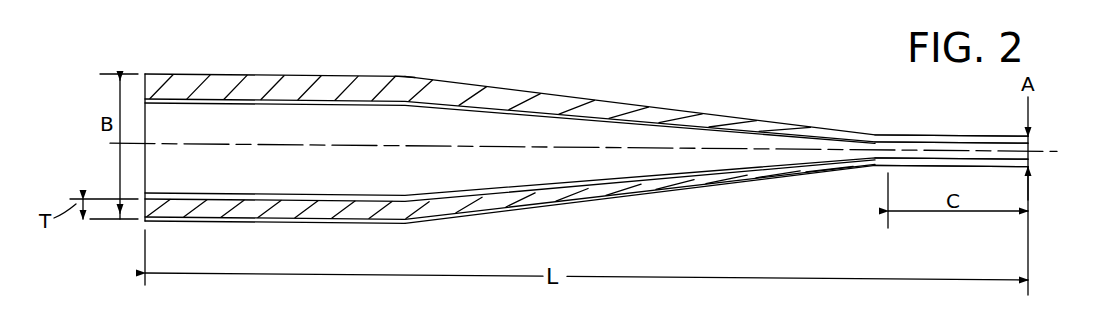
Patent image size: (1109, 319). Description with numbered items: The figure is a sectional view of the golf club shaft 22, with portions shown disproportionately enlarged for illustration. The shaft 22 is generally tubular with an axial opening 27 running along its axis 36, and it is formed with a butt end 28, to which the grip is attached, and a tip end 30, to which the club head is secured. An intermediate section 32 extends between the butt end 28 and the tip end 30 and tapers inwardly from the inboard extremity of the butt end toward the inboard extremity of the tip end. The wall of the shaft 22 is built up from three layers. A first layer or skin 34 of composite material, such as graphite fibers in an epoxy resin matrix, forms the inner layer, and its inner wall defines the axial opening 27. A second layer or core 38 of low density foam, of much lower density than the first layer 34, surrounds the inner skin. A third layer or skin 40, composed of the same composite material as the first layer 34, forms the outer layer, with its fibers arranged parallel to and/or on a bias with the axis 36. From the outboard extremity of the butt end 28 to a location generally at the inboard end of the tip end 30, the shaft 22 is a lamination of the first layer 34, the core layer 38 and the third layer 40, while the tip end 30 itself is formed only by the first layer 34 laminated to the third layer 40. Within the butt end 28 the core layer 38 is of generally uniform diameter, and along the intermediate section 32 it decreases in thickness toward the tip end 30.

The shaft 22 is at (657, 60).
The axial opening 27 is at (656, 128).
The butt end 28 is at (250, 74).
The tip end 30 is at (922, 137).
The intermediate section 32 is at (505, 88).
The first layer or skin 34 is at (545, 113).
The axis 36 is at (1038, 152).
The second layer or core 38 is at (437, 90).
The third layer or skin 40 is at (405, 75).